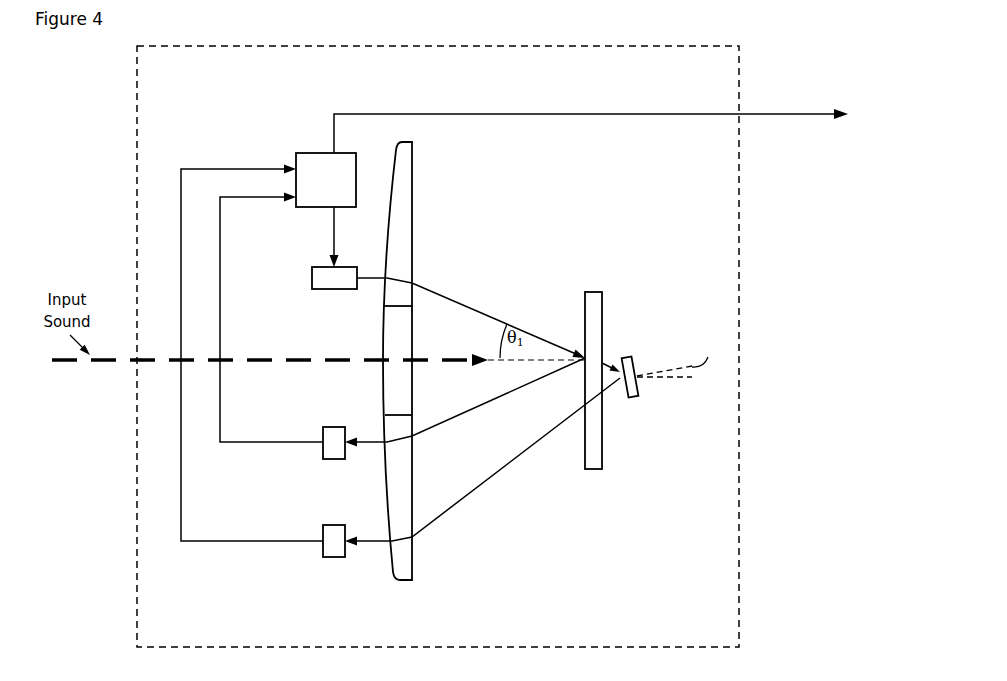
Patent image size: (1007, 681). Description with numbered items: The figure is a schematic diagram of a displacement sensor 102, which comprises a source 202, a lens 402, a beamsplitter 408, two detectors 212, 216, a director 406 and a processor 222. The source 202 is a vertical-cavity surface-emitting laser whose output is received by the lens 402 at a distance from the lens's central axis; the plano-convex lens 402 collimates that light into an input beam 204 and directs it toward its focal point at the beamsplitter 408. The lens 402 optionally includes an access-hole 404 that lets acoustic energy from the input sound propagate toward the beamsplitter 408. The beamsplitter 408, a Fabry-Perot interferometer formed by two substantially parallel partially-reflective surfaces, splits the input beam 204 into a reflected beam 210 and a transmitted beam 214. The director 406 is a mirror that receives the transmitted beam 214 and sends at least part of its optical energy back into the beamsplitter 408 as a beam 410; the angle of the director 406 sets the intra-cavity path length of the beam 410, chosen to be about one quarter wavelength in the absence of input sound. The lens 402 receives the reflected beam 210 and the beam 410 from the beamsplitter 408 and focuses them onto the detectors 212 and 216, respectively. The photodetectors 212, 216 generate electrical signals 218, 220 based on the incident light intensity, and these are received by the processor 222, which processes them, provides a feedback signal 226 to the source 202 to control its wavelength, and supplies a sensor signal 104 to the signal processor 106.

The displacement sensor 102 is at (315, 71).
The sensor signal 104 is at (591, 115).
The signal processor 106 is at (850, 167).
The processor 222 is at (316, 164).
The feedback signal 226 is at (307, 237).
The source 202 is at (308, 277).
The lens 402 is at (434, 361).
The access-hole 404 is at (366, 360).
The input beam 204 is at (471, 307).
The beamsplitter 408 is at (629, 363).
The transmitted beam 214 is at (634, 344).
The director 406 is at (671, 376).
The reflected beam 210 is at (465, 410).
The beam 410 is at (482, 462).
The detector 212 is at (310, 429).
The detector 216 is at (310, 528).
The electrical signal 218 is at (259, 334).
The electrical signal 220 is at (252, 369).